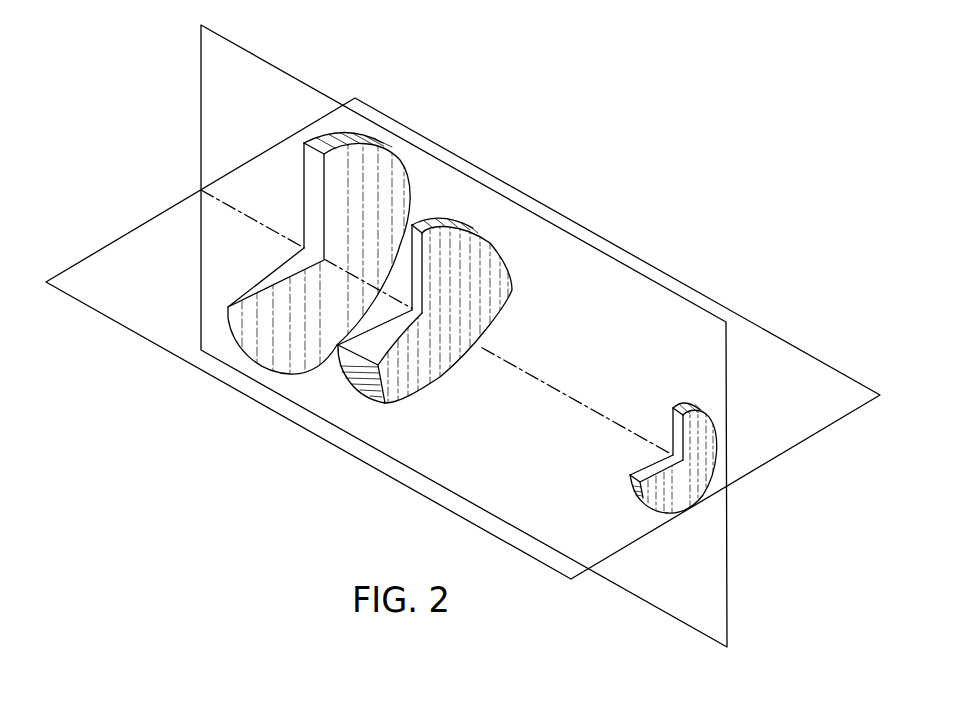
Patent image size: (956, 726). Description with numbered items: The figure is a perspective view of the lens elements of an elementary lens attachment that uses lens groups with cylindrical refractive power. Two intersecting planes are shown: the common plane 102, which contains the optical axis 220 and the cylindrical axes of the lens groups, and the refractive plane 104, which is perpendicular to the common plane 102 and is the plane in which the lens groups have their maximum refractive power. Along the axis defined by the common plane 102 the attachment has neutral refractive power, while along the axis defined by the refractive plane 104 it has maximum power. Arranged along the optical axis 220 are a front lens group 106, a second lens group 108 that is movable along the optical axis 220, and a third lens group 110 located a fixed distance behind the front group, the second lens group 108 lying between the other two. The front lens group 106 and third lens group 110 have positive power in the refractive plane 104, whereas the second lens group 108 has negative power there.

The common plane 102 is at (670, 608).
The refractive plane 104 is at (808, 367).
The front lens group 106 is at (383, 145).
The second lens group 108 is at (510, 288).
The third lens group 110 is at (673, 408).
The optical axis 220 is at (727, 488).